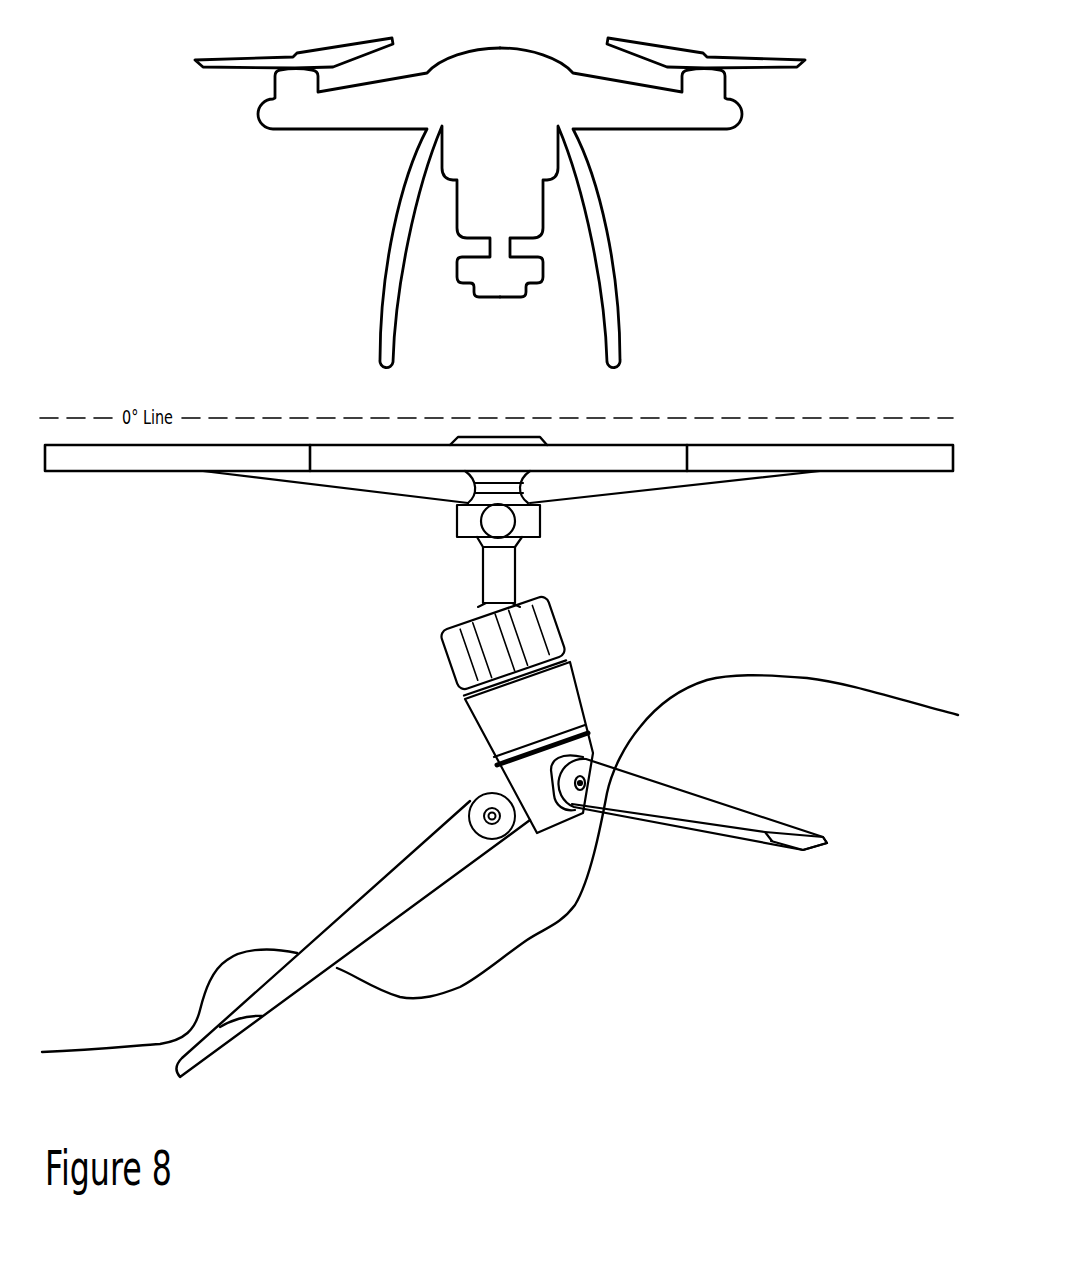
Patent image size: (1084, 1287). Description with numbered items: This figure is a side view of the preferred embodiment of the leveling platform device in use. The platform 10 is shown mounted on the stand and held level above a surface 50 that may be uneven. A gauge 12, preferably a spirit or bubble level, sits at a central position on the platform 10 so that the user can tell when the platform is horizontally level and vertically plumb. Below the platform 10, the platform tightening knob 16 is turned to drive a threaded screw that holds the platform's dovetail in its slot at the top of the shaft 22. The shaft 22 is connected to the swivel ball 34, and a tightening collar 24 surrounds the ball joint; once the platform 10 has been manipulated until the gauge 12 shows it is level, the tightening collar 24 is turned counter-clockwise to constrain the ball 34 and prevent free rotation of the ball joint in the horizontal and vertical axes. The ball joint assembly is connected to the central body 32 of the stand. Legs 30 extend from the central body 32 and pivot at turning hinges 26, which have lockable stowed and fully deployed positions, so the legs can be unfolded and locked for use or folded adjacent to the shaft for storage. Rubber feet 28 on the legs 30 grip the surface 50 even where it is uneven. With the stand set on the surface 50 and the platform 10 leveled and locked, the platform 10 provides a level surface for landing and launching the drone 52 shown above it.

The drone 52 is at (700, 104).
The platform 10 is at (748, 457).
The gauge 12 is at (523, 443).
The platform tightening knob 16 is at (492, 525).
The shaft 22 is at (490, 575).
The ball 34 is at (483, 607).
The tightening collar 24 is at (550, 640).
The central body 32 is at (485, 728).
The turning hinges 26 is at (500, 818).
The legs 30 is at (685, 792).
The rubber feet 28 is at (783, 843).
The surface 50 is at (622, 956).